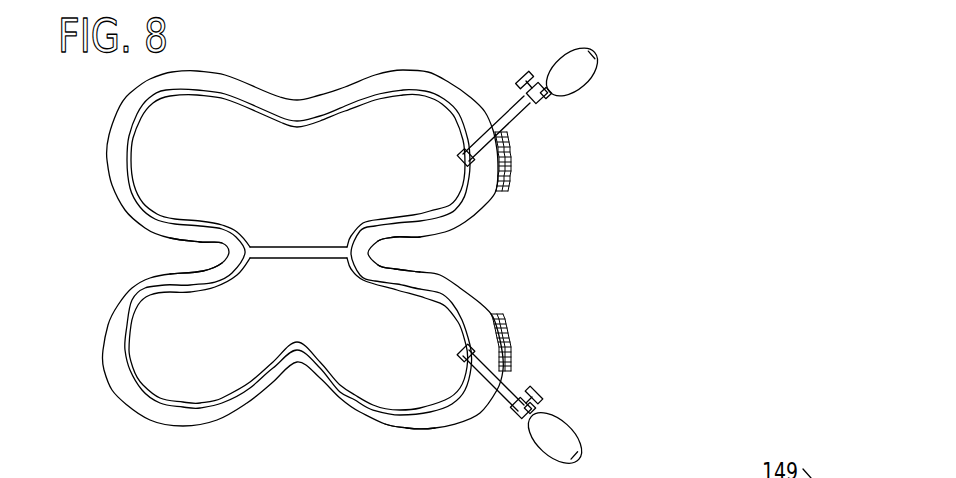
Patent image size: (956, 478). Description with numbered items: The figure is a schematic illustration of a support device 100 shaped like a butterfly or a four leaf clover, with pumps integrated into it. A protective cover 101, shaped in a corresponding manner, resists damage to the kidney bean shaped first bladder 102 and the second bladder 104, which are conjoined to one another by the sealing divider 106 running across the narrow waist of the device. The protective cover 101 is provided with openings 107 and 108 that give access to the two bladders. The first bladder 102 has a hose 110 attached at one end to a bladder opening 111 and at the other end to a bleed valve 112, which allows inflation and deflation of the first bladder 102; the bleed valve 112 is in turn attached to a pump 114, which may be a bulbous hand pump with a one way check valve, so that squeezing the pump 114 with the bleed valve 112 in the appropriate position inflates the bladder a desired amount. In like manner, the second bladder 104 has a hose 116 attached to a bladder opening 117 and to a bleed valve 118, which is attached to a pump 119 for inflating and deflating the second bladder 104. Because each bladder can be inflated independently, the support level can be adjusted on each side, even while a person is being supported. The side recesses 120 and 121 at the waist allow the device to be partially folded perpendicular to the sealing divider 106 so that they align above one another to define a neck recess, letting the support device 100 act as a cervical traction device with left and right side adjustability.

The support device 100 is at (293, 255).
The protective cover 101 is at (411, 427).
The first bladder 102 is at (313, 186).
The second bladder 104 is at (313, 318).
The sealing divider 106 is at (288, 247).
The opening 107 is at (508, 193).
The opening 108 is at (508, 318).
The hose 110 is at (525, 112).
The bladder opening 111 is at (462, 158).
The bleed valve 112 is at (516, 78).
The pump 114 is at (578, 62).
The hose 116 is at (510, 385).
The bladder opening 117 is at (462, 357).
The bleed valve 118 is at (543, 392).
The pump 119 is at (567, 433).
The side recess 120 is at (206, 252).
The side recess 121 is at (389, 254).